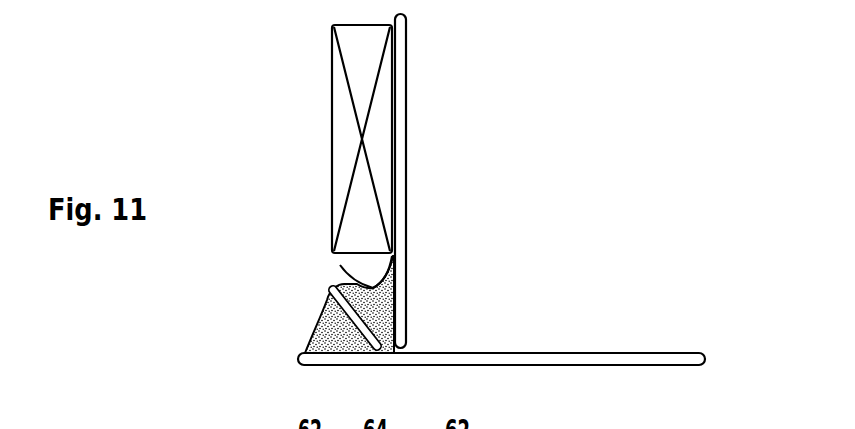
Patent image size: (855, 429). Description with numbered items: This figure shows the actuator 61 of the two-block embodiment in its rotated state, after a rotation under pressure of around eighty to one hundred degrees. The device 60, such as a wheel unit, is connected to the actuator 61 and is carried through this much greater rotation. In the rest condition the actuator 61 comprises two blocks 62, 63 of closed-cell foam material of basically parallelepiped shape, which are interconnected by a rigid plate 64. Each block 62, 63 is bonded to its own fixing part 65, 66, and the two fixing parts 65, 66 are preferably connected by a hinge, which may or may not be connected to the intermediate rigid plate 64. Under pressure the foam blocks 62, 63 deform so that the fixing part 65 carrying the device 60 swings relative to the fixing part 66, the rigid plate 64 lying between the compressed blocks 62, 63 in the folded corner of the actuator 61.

The device 60 is at (345, 152).
The actuator 61 is at (300, 294).
The block of closed-cell foam material 62 is at (317, 342).
The block of closed-cell foam material 63 is at (340, 265).
The rigid plate 64 is at (355, 306).
The fixing part 65 is at (398, 210).
The fixing part 66 is at (525, 346).